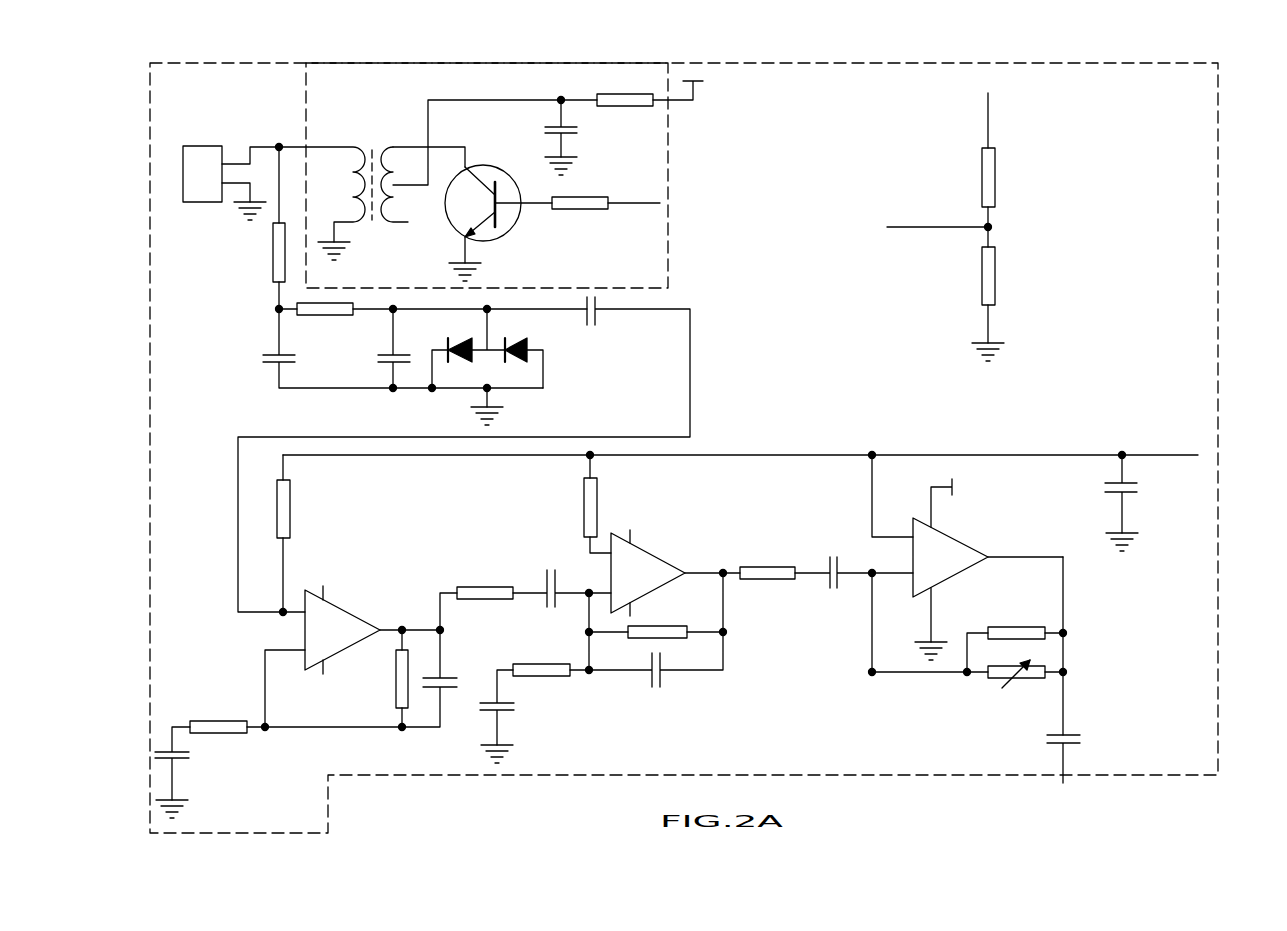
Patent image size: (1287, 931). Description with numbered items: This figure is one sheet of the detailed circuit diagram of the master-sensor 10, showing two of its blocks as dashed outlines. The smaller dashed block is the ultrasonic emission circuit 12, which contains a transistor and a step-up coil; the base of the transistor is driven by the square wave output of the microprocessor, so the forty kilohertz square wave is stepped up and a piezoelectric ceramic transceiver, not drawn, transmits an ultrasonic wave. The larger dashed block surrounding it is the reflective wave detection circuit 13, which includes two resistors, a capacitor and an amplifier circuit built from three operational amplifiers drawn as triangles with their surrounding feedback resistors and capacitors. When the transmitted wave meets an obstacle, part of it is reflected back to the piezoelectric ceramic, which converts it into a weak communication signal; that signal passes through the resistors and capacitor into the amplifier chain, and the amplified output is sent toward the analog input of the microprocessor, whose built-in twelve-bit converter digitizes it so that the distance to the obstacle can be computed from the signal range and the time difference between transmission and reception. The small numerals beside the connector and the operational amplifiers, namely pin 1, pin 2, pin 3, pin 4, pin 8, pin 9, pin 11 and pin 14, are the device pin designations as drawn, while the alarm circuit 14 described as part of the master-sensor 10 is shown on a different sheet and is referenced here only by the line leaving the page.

The ultrasonic emission circuit 12 is at (668, 165).
The reflective wave detection circuit 13 is at (1217, 228).
The op-amp U5A output pin 1 is at (970, 569).
The connector CON5 pin 2 is at (217, 175).
The diode D1 common pin 3 is at (504, 363).
The op-amp supply pin 4 is at (952, 502).
The op-amp U5C output pin 8 is at (410, 622).
The op-amp U5C inverting input pin 9 is at (285, 678).
The master-sensor 10 is at (350, 654).
The op-amp ground pin 11 is at (931, 624).
The alarm circuit 14 is at (656, 569).